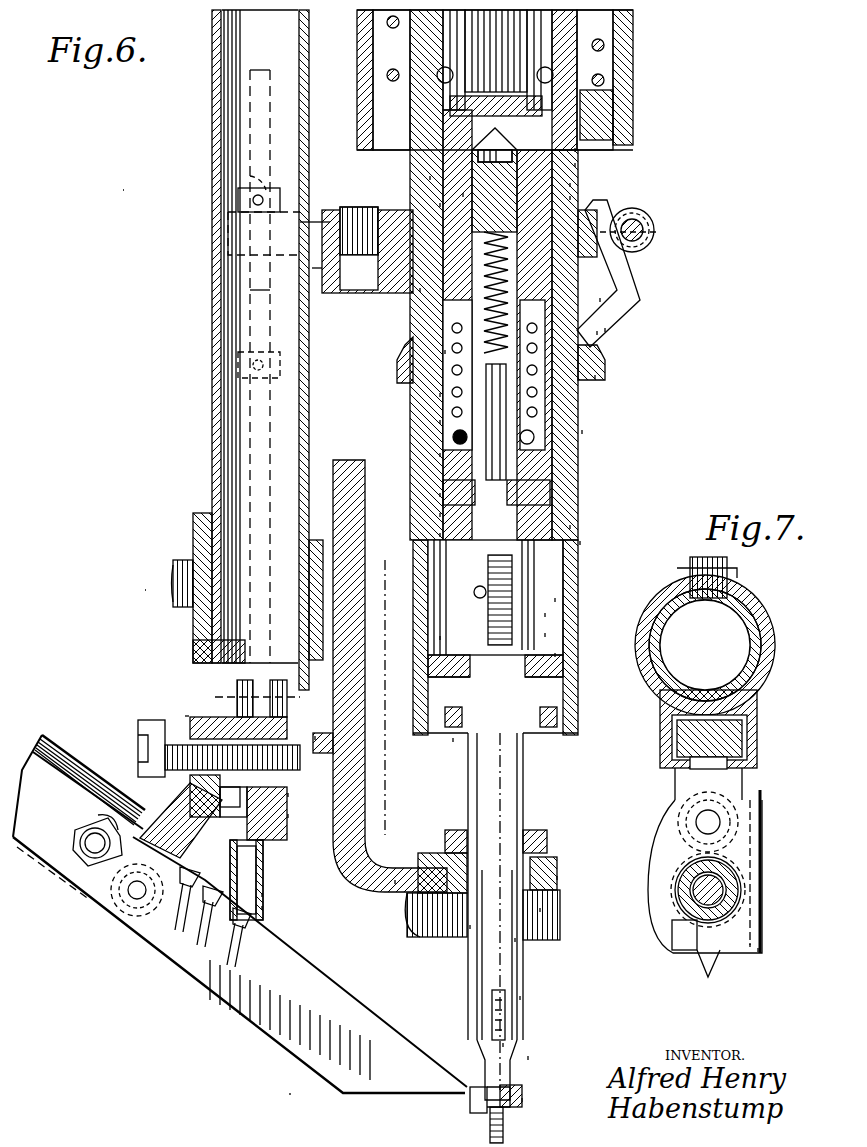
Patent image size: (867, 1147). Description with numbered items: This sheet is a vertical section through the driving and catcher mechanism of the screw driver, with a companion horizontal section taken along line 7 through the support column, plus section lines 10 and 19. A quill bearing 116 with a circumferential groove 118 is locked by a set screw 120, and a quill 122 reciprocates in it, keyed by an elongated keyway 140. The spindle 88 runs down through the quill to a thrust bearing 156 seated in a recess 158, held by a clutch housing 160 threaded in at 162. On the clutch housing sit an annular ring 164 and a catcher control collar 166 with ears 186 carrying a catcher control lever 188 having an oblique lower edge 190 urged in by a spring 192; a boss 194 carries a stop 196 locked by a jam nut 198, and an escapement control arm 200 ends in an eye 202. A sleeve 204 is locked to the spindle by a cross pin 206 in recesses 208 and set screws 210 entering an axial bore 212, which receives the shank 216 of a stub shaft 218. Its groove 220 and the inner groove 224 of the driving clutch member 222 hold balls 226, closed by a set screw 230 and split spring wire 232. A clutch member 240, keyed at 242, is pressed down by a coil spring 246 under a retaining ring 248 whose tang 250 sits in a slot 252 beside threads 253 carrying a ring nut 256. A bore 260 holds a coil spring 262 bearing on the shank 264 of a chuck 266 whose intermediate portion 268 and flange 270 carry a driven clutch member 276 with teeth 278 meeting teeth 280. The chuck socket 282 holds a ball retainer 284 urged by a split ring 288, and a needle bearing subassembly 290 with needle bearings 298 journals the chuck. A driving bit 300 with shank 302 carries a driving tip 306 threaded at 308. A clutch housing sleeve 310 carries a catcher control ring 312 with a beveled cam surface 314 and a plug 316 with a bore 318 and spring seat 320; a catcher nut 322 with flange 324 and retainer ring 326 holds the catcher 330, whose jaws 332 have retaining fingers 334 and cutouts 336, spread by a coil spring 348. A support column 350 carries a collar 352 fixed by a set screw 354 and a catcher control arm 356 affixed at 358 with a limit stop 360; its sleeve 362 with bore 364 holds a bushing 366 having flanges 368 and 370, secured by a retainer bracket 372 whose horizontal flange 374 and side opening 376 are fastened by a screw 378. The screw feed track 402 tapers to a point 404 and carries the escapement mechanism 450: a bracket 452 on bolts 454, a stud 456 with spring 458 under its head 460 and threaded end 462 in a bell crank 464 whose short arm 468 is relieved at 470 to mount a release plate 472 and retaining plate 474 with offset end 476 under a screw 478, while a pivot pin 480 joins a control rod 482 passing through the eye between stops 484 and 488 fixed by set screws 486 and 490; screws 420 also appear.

In FIG. 6, the spindle 88 is at (495, 51).
In FIG. 6, the quill bearing 116 is at (620, 83).
In FIG. 6, the circumferential groove 118 is at (377, 130).
In FIG. 6, the set screw 120 is at (630, 102).
In FIG. 6, the quill 122 is at (610, 25).
In FIG. 6, the elongated keyway 140 is at (600, 55).
In FIG. 6, the rotary thrust spindle bearing 156 is at (430, 60).
In FIG. 6, the recess or counterbore 158 is at (430, 52).
In FIG. 6, the clutch housing 160 is at (420, 290).
In FIG. 6, the threaded connection 162 is at (437, 135).
In FIG. 6, the outer annular ring 164 is at (570, 198).
In FIG. 6, the catcher control collar 166 is at (600, 253).
In FIG. 6, the outstanding ears 186 is at (590, 207).
In FIG. 6, the catcher control lever 188 is at (617, 317).
In FIG. 6, the oblique lower edge 190 is at (597, 333).
In FIG. 6, the spring 192 is at (600, 300).
In FIG. 6, the boss or projection 194 is at (413, 278).
In FIG. 6, the stop 196 is at (430, 178).
In FIG. 6, the jam nut 198 is at (312, 268).
In FIG. 6, the escapement control arm 200 is at (300, 222).
In FIG. 6, the eye or sleeve 202 is at (228, 216).
In FIG. 6, the sleeve 204 is at (575, 165).
In FIG. 6, the cross pin 206 is at (440, 118).
In FIG. 6, the recesses 208 is at (443, 100).
In FIG. 6, the set screws 210 is at (570, 185).
In FIG. 6, the axial bore 212 is at (575, 150).
In FIG. 6, the shank 216 is at (483, 170).
In FIG. 6, the spindle or stub shaft 218 is at (517, 385).
In FIG. 6, the circumferential groove 220 is at (520, 433).
In FIG. 6, the driving clutch member 222 is at (440, 455).
In FIG. 6, the inner circumferential groove 224 is at (582, 432).
In FIG. 6, the balls 226 is at (440, 422).
In FIG. 6, the set screw 230 is at (440, 442).
In FIG. 6, the split spring wire 232 is at (525, 420).
In FIG. 6, the clutch member 240 is at (547, 402).
In FIG. 6, the key 242 is at (440, 395).
In FIG. 6, the coil spring 246 is at (605, 330).
In FIG. 6, the retaining ring or washer 248 is at (640, 295).
In FIG. 6, the tang 250 is at (445, 325).
In FIG. 6, the slot 252 is at (445, 352).
In FIG. 6, the threads 253 is at (400, 362).
In FIG. 6, the ring nut 256 is at (445, 300).
In FIG. 6, the axial bore 260 is at (463, 195).
In FIG. 6, the coil spring 262 is at (440, 205).
In FIG. 6, the shank 264 is at (540, 462).
In FIG. 6, the chuck or collet 266 is at (570, 527).
In FIG. 6, the intermediate diameter portion 268 is at (580, 493).
In FIG. 6, the flange 270 is at (440, 535).
In FIG. 6, the driven clutch member 276 is at (440, 515).
In FIG. 6, the bevelled teeth 278 is at (440, 495).
In FIG. 6, the teeth 280 is at (440, 475).
In FIG. 6, the bit receiving socket 282 is at (555, 600).
In FIG. 6, the ball retainer 284 is at (440, 638).
In FIG. 6, the split spring retaining ring 288 is at (545, 580).
In FIG. 6, the clutch needle bearing and retainer subassembly 290 is at (440, 553).
In FIG. 6, the needle bearings 298 is at (580, 543).
In FIG. 6, the driving bit 300 is at (523, 770).
In FIG. 7, the driving bit 300 is at (715, 885).
In FIG. 6, the non-circular shank portion 302 is at (545, 615).
In FIG. 6, the driving tip 306 is at (503, 1045).
In FIG. 6, the threads 308 is at (520, 998).
In FIG. 6, the clutch housing sleeve 310 is at (470, 592).
In FIG. 6, the catcher control ring 312 is at (595, 377).
In FIG. 6, the beveled cam surface 314 is at (612, 350).
In FIG. 6, the plug 316 is at (555, 655).
In FIG. 6, the axial bore 318 is at (545, 635).
In FIG. 6, the spring seat 320 is at (565, 680).
In FIG. 6, the catcher nut 322 is at (575, 700).
In FIG. 6, the flange 324 is at (453, 740).
In FIG. 6, the retainer ring 326 is at (580, 722).
In FIG. 6, the catcher 330 is at (528, 1058).
In FIG. 6, the jaws 332 is at (470, 955).
In FIG. 7, the jaws 332 is at (708, 975).
In FIG. 6, the retaining fingers 334 is at (522, 1100).
In FIG. 6, the cut out 336 is at (487, 1077).
In FIG. 6, the coil spring 348 is at (440, 683).
In FIG. 6, the support tube or column 350 is at (215, 386).
In FIG. 7, the support tube or column 350 is at (752, 645).
In FIG. 6, the collar 352 is at (197, 515).
In FIG. 7, the collar 352 is at (740, 600).
In FIG. 6, the set screw 354 is at (180, 560).
In FIG. 7, the set screw 354 is at (727, 567).
In FIG. 6, the catcher control arm 356 is at (262, 880).
In FIG. 7, the catcher control arm 356 is at (690, 795).
In FIG. 6, the attachment 358 is at (200, 629).
In FIG. 7, the attachment 358 is at (695, 782).
In FIG. 6, the limit stop 360 is at (335, 470).
In FIG. 6, the sleeve or cylinder 362 is at (557, 878).
In FIG. 7, the sleeve or cylinder 362 is at (682, 925).
In FIG. 6, the vertical bore 364 is at (560, 865).
In FIG. 6, the bushing 366 is at (540, 910).
In FIG. 7, the bushing 366 is at (750, 945).
In FIG. 6, the circumferential flange 368 is at (522, 832).
In FIG. 6, the circumferential flange 370 is at (470, 927).
In FIG. 6, the retainer bracket 372 is at (515, 940).
In FIG. 7, the retainer bracket 372 is at (758, 950).
In FIG. 6, the horizontal flange 374 is at (558, 893).
In FIG. 7, the horizontal flange 374 is at (745, 792).
In FIG. 6, the side opening 376 is at (430, 920).
In FIG. 6, the screw 378 is at (395, 882).
In FIG. 7, the screw 378 is at (695, 822).
In FIG. 6, the screw feed track 402 is at (270, 1025).
In FIG. 6, the point 404 is at (458, 1088).
In FIG. 6, the screw 420 is at (175, 960).
In FIG. 6, the escapement mechanism 450 is at (200, 742).
In FIG. 6, the bracket 452 is at (190, 800).
In FIG. 6, the bolts 454 is at (137, 890).
In FIG. 6, the stud or bolt 456 is at (185, 715).
In FIG. 6, the spring 458 is at (178, 745).
In FIG. 6, the stud or bolt head 460 is at (160, 747).
In FIG. 6, the reduced threaded end 462 is at (288, 795).
In FIG. 6, the bell crank 464 is at (315, 738).
In FIG. 6, the short arm 468 is at (288, 816).
In FIG. 6, the relieved area 470 is at (262, 860).
In FIG. 6, the release plate 472 is at (262, 895).
In FIG. 6, the retaining plate 474 is at (262, 908).
In FIG. 6, the offset attaching end 476 is at (215, 855).
In FIG. 6, the screw or bolt 478 is at (130, 836).
In FIG. 6, the pivot pin 480 is at (240, 700).
In FIG. 6, the control rod 482 is at (250, 290).
In FIG. 6, the stop 484 is at (245, 195).
In FIG. 6, the set screw 486 is at (250, 180).
In FIG. 6, the stop 488 is at (245, 385).
In FIG. 6, the set screw 490 is at (250, 342).
In FIG. 6, the section line 7 is at (300, 590).
In FIG. 6, the section line 10 is at (300, 676).
In FIG. 6, the section line 19 is at (150, 190).